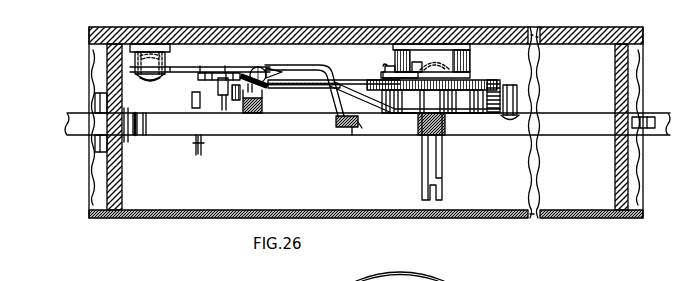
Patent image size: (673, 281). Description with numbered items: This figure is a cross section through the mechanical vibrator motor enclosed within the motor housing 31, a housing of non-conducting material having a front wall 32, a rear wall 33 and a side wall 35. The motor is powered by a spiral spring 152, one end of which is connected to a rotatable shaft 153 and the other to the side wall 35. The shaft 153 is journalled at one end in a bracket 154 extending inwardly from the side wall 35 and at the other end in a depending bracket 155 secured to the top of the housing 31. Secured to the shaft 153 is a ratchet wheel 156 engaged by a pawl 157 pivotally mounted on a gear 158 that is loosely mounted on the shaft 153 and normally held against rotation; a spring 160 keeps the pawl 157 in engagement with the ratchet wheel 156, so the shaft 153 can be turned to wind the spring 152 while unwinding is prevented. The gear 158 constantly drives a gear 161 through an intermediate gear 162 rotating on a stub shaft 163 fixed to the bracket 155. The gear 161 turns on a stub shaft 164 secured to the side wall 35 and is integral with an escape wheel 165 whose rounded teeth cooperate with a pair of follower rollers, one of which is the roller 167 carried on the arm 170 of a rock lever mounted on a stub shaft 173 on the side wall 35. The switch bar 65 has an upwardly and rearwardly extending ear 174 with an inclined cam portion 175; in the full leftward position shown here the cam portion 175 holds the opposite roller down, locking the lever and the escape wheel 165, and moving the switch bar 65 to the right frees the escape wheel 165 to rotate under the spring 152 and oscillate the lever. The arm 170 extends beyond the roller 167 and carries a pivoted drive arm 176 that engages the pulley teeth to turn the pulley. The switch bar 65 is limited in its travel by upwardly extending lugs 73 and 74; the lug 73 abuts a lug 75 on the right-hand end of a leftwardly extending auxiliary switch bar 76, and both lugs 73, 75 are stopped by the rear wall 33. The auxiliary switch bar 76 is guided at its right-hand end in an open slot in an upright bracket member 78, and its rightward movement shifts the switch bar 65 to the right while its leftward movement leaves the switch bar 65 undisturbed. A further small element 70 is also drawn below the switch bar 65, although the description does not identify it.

The motor housing 31 is at (250, 27).
The front wall 32 is at (615, 191).
The rear wall 33 is at (122, 197).
The side wall 35 is at (331, 43).
The switch bar 65 is at (257, 136).
The pin 70 is at (202, 146).
The lug 73 is at (138, 136).
The lug 74 is at (649, 118).
The lug 75 is at (139, 142).
The auxiliary switch bar 76 is at (76, 136).
The upright bracket member 78 is at (95, 100).
The spiral spring 152 is at (494, 125).
The rotatable shaft 153 is at (440, 185).
The bracket 154 is at (473, 72).
The depending bracket 155 is at (409, 116).
The ratchet wheel 156 is at (467, 81).
The pawl 157 is at (425, 70).
The gear 158 is at (378, 83).
The spring 160 is at (407, 46).
The gear 161 is at (235, 96).
The intermediate gear 162 is at (336, 80).
The stub shaft 163 is at (309, 89).
The stub shaft 164 is at (250, 86).
The escape wheel 165 is at (207, 80).
The follower roller 167 is at (275, 80).
The arm 170 is at (219, 66).
The stub shaft 173 is at (153, 81).
The ear 174 is at (256, 108).
The inclined cam portion 175 is at (214, 101).
The drive arm 176 is at (360, 129).